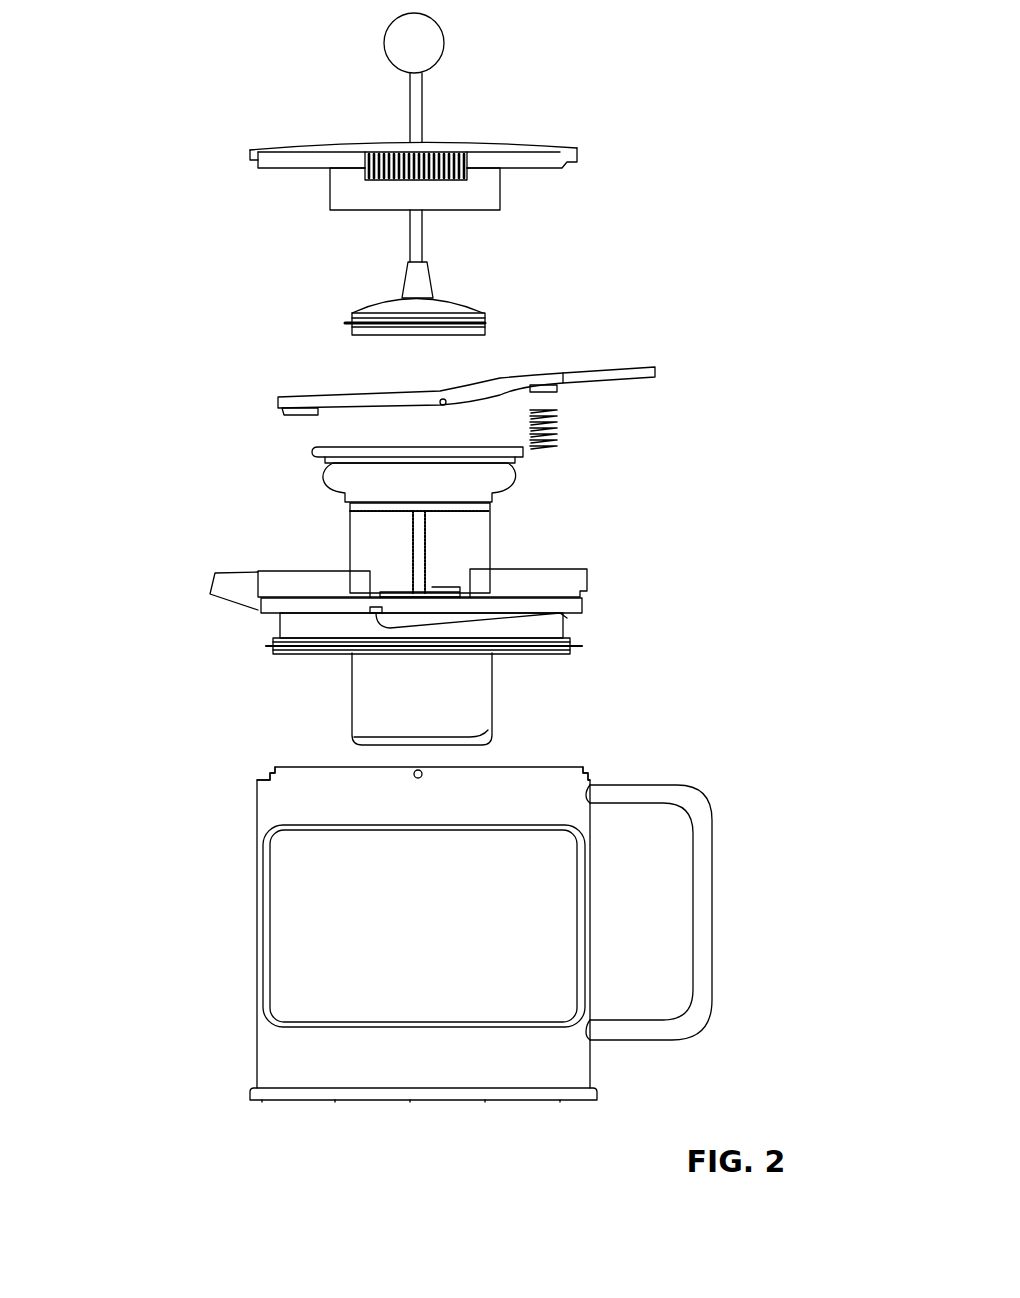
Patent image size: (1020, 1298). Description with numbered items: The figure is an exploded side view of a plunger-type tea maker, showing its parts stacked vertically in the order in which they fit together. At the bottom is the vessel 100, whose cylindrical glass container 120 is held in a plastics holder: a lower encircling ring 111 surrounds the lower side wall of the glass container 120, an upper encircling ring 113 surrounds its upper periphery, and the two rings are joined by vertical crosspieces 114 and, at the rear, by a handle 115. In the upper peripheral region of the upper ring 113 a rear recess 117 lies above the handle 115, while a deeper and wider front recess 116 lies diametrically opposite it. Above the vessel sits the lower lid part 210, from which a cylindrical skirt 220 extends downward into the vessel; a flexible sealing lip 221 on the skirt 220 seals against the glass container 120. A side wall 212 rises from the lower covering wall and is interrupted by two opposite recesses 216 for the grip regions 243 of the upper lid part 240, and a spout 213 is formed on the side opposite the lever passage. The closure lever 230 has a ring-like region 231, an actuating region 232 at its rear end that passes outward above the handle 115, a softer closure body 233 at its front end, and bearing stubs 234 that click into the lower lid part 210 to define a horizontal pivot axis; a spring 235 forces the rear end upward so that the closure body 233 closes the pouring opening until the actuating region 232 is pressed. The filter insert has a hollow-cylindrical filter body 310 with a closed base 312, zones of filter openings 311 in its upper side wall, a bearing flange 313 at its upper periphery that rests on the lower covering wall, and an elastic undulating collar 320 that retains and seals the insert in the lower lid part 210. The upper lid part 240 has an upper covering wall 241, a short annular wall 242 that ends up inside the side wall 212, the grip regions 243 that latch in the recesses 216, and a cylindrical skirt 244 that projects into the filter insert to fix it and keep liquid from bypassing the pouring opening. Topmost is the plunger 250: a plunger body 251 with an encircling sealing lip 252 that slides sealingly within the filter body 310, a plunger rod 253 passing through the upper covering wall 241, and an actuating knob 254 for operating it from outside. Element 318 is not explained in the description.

The vessel 100 is at (434, 918).
The lower encircling ring 111 is at (280, 1051).
The upper encircling ring 113 is at (270, 807).
The vertical crosspieces 114 is at (262, 910).
The handle 115 is at (713, 898).
The front recess 116 is at (268, 774).
The rear recess 117 is at (587, 768).
The cylindrical glass container 120 is at (404, 941).
The lower lid part 210 is at (361, 601).
The side wall 212 is at (290, 590).
The spout 213 is at (235, 587).
The recesses 216 is at (440, 576).
The cylindrical skirt 220 is at (302, 618).
The sealing lip 221 is at (262, 646).
The closure lever 230 is at (375, 388).
The ring-like region 231 is at (319, 402).
The actuating region 232 is at (590, 383).
The closure body 233 is at (297, 416).
The bearing stubs 234 is at (440, 400).
The spring 235 is at (557, 414).
The upper lid part 240 is at (366, 172).
The upper covering wall 241 is at (515, 151).
The annular wall 242 is at (538, 157).
The grip regions 243 is at (470, 168).
The cylindrical skirt 244 is at (463, 190).
The plunger 250 is at (327, 174).
The plunger body 251 is at (453, 308).
The sealing lip 252 is at (478, 323).
The plunger rod 253 is at (415, 100).
The actuating knob 254 is at (415, 40).
The filter body 310 is at (472, 675).
The filter openings 311 is at (485, 528).
The closed base 312 is at (475, 737).
The bearing flange 313 is at (505, 451).
The wire 318 is at (567, 618).
The collar 320 is at (490, 475).